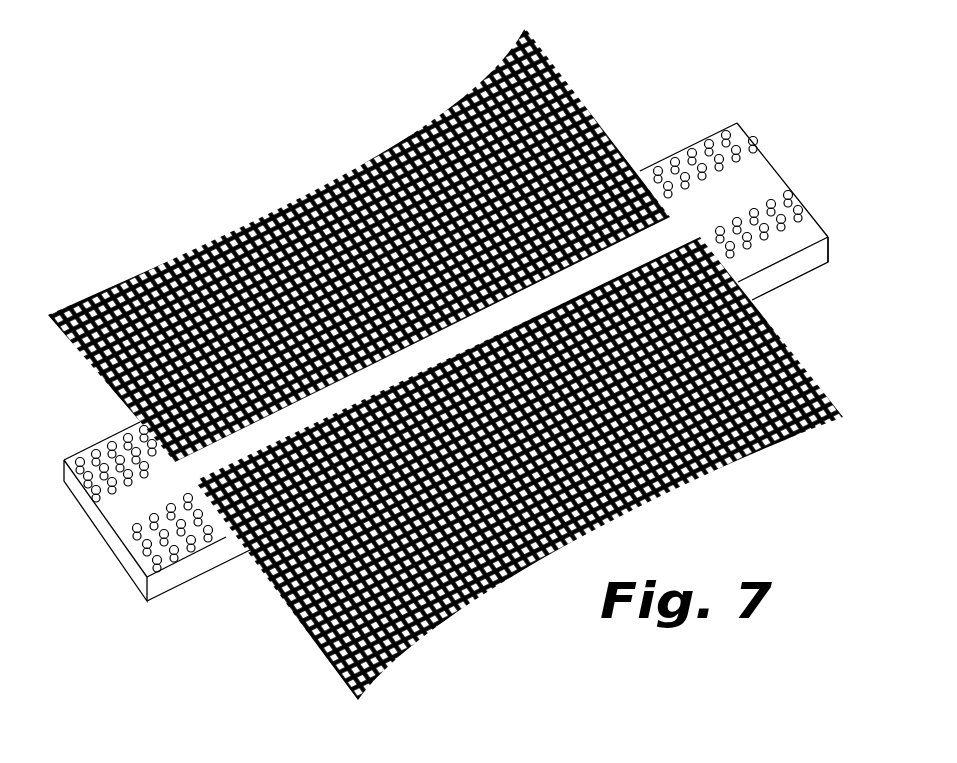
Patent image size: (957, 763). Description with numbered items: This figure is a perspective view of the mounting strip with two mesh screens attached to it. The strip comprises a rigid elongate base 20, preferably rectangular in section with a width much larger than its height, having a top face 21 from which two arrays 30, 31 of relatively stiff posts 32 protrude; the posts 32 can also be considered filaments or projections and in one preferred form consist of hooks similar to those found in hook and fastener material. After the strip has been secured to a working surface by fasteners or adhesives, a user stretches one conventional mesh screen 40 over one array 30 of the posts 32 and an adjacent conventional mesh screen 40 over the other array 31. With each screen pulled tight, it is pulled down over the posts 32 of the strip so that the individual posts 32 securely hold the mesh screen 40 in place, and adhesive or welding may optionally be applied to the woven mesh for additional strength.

The elongate base 20 is at (188, 590).
The top face 21 is at (90, 452).
The array of posts 30 is at (758, 136).
The array of posts 31 is at (822, 215).
The posts 32 is at (767, 178).
The mesh screen 40 is at (120, 280).